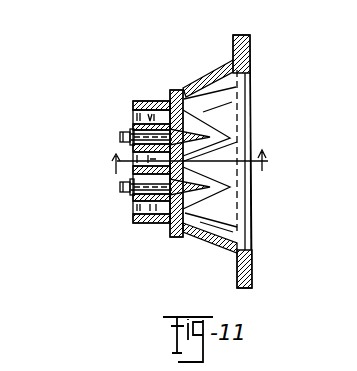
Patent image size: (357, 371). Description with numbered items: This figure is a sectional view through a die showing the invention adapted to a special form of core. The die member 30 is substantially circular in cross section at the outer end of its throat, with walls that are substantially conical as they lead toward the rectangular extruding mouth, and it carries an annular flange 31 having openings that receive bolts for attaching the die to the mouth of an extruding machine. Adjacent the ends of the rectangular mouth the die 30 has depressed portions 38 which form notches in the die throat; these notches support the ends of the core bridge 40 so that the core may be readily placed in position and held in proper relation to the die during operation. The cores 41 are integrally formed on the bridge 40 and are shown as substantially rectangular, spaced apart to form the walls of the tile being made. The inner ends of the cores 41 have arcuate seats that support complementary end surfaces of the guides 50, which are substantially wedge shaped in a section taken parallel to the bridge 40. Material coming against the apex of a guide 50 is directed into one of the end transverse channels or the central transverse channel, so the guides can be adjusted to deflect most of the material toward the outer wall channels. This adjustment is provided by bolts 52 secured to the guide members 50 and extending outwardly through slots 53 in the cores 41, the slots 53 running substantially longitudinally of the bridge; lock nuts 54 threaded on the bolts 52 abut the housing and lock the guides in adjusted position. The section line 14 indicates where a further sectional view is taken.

The section line 14- 14 is at (192, 166).
The die member 30 is at (202, 80).
The annular flange 31 is at (250, 56).
The depressed portions 38 is at (182, 93).
The core bridge 40 is at (148, 106).
The cores 41 is at (130, 106).
The guides 50 is at (207, 131).
The bolts 52 is at (118, 154).
The slots 53 is at (122, 134).
The lock nuts 54 is at (128, 188).